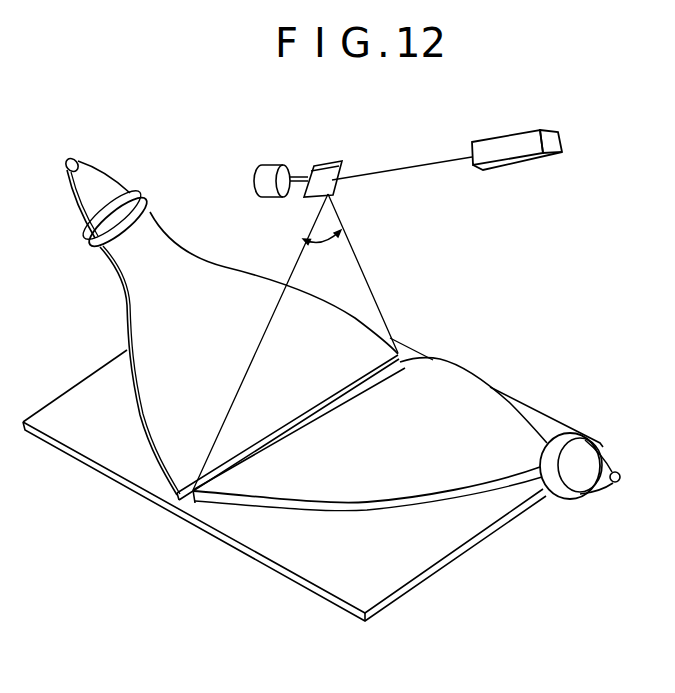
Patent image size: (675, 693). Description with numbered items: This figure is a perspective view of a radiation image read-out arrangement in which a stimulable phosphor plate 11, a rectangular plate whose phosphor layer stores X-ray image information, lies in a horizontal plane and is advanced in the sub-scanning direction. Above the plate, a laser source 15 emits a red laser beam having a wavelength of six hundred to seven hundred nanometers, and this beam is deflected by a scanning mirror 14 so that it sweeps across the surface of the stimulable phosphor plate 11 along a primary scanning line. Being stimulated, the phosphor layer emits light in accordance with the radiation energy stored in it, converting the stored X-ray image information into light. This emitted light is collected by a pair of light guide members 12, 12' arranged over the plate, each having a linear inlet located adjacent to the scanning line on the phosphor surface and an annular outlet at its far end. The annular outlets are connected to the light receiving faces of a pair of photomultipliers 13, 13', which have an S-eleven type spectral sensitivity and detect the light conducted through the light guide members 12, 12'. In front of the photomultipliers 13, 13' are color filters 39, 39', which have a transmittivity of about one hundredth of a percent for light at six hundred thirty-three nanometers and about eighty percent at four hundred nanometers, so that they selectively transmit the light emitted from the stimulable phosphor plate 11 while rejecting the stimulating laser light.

The stimulable phosphor plate 11 is at (325, 580).
The light guide member 12 is at (398, 421).
The light guide member 12' is at (249, 356).
The photomultiplier 13 is at (613, 458).
The photomultiplier 13' is at (96, 180).
The scanning mirror 14 is at (333, 162).
The laser source 15 is at (507, 145).
The color filter 39 is at (573, 440).
The color filter 39' is at (133, 204).